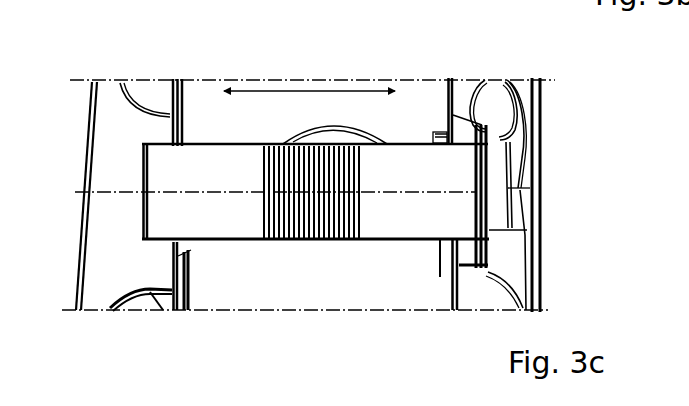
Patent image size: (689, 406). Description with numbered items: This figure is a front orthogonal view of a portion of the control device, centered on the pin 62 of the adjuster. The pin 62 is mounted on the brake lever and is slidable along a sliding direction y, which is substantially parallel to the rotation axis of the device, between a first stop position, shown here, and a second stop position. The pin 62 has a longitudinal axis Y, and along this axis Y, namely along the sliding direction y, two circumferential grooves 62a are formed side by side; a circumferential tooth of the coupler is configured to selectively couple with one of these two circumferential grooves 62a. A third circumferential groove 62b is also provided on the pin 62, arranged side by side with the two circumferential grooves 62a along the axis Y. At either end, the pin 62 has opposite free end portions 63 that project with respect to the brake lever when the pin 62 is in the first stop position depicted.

The pin 62 is at (165, 150).
The circumferential grooves 62a is at (278, 236).
The third circumferential groove 62b is at (347, 236).
The free end portions 63 is at (143, 183).
The axis Y is at (188, 193).
The sliding direction y is at (309, 64).